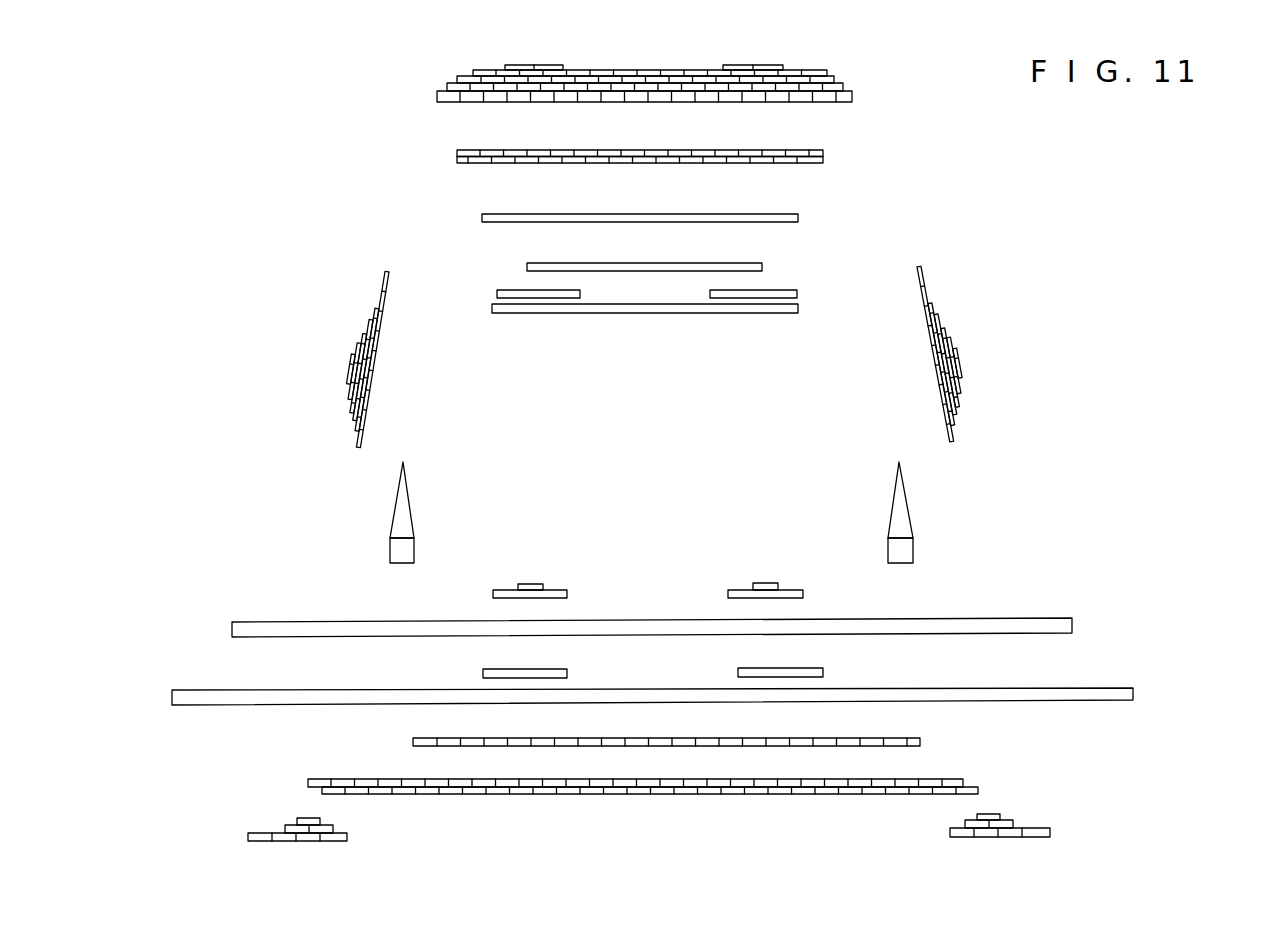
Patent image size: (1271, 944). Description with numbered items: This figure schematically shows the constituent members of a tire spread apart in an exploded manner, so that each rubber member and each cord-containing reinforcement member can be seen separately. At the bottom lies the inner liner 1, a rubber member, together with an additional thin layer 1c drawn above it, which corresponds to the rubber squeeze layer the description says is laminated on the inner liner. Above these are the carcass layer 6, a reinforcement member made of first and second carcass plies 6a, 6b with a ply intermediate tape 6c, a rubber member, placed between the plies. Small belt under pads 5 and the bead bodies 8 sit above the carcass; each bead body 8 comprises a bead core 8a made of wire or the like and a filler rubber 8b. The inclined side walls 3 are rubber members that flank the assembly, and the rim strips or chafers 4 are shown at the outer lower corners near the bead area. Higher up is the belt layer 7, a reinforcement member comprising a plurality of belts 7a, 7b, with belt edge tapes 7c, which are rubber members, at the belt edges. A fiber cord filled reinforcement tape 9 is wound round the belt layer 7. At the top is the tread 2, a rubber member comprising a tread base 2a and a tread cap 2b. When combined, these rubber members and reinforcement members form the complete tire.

The inner liner 1 is at (627, 795).
The fixing member upper brick row 1c is at (413, 742).
The tread 2 is at (332, 55).
The tread base 2a is at (470, 150).
The tread cap 2b is at (456, 84).
The side walls 3 is at (375, 395).
The rim strips or chafers 4 is at (285, 827).
The belt under pads 5 is at (561, 590).
The carcass layer 6 is at (1182, 605).
The first carcass ply 6a is at (1134, 694).
The second carcass ply 6b is at (1074, 625).
The ply intermediate tape 6c is at (740, 672).
The belt layer 7 is at (731, 375).
The belt 7a is at (637, 313).
The belt 7b is at (677, 271).
The belt edge tape 7c is at (527, 290).
The bead body 8 is at (312, 487).
The bead core 8a is at (398, 550).
The filler rubber 8b is at (398, 507).
The fiber cord filled reinforcement tape 9 is at (508, 214).